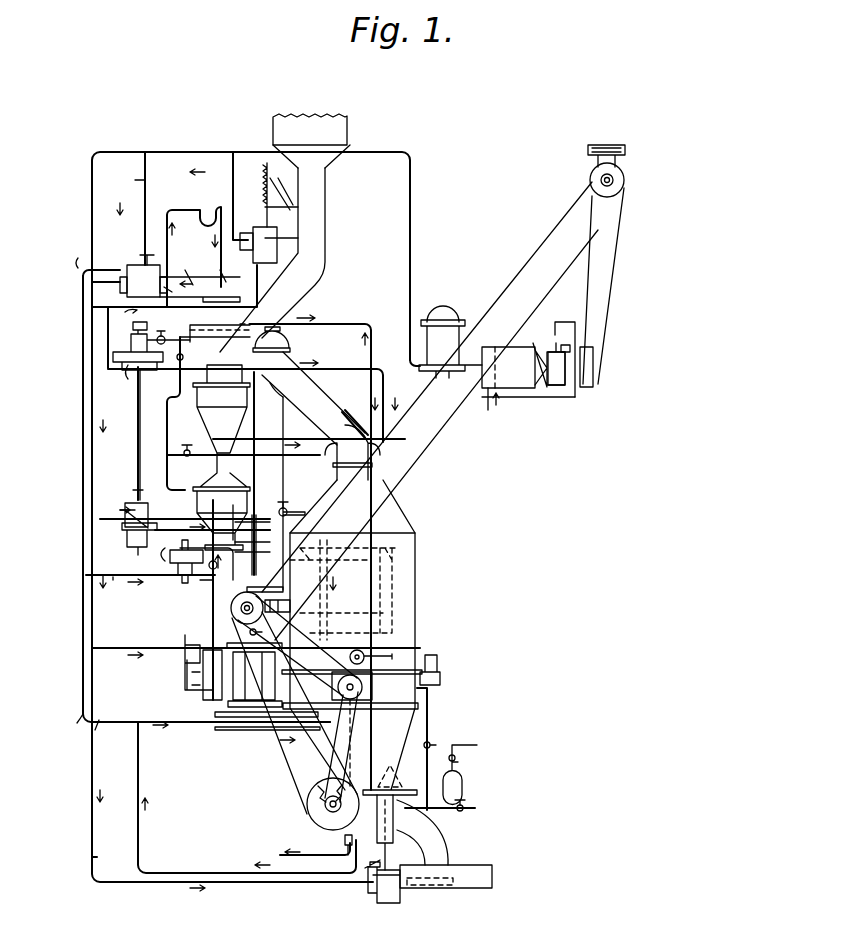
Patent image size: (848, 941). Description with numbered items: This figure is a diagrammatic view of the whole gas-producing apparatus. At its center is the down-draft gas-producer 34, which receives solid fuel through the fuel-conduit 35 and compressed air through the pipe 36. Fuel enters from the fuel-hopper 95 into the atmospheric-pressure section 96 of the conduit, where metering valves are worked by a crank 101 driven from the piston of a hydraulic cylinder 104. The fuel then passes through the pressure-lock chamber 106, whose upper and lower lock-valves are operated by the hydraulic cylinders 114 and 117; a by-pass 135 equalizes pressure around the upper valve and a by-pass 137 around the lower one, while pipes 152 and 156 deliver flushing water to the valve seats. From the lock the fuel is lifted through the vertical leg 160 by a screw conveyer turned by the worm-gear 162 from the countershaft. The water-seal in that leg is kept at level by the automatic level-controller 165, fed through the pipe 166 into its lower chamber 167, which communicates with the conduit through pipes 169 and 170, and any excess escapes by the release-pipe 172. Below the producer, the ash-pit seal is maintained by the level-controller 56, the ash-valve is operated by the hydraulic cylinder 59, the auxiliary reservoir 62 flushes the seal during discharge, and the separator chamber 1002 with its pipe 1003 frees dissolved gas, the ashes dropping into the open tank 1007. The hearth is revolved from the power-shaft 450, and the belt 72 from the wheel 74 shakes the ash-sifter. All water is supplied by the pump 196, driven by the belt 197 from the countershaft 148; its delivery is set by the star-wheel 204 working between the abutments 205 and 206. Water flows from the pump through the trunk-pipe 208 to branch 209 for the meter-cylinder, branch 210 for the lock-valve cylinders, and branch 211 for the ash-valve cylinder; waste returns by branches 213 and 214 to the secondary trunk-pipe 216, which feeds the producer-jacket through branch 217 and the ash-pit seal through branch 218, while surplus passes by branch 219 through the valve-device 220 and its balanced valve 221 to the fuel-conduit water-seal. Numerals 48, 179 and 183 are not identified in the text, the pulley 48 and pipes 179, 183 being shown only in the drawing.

The down-draft gas-producer 34 is at (353, 637).
The fuel-conduit 35 is at (316, 396).
The pipe 36 is at (287, 508).
The pulley 48 is at (625, 172).
The automatic level-controller 56 is at (210, 668).
The hydraulic cylinder 59 is at (392, 895).
The auxiliary reservoir 62 is at (250, 694).
The belt 72 is at (285, 650).
The wheel 74 is at (358, 698).
The fuel-hopper 95 is at (350, 130).
The atmospheric-pressure section 96 is at (318, 217).
The crank 101 is at (193, 583).
The hydraulic cylinder 104 is at (277, 248).
The lock-chamber 106 is at (225, 425).
The hydraulic cylinder 114 is at (100, 284).
The hydraulic cylinder 117 is at (336, 367).
The by-pass 135 is at (200, 340).
The by-pass 137 is at (166, 468).
The countershaft 148 is at (600, 179).
The pipe 152 is at (108, 340).
The pipe 156 is at (167, 223).
The vertical leg 160 is at (273, 458).
The worm-gear 162 is at (290, 607).
The automatic level-controller 165 is at (137, 440).
The pipe 166 is at (122, 509).
The lower chamber 167 is at (138, 534).
The pipe 169 is at (173, 530).
The pipe 170 is at (185, 508).
The level-controller release-pipe 172 is at (172, 548).
The pipe 179 is at (190, 338).
The pipe 183 is at (305, 336).
The pump 196 is at (528, 376).
The belt 197 is at (616, 240).
The star-wheel 204 is at (570, 342).
The abutment 205 is at (568, 348).
The abutment 206 is at (555, 322).
The trunk-pipe 208 is at (410, 243).
The branch 209 is at (233, 173).
The branch 210 is at (121, 181).
The branch 211 is at (93, 857).
The branch 213 is at (240, 282).
The branch 214 is at (120, 273).
The secondary trunk-pipe 216 is at (91, 468).
The branch 217 is at (132, 648).
The branch 218 is at (125, 722).
The branch 219 is at (113, 577).
The valve-device 220 is at (150, 575).
The balanced valve 221 is at (264, 520).
The power-shaft 450 is at (335, 814).
The separator chamber 1002 is at (455, 783).
The pipe 1003 is at (445, 812).
The tank 1007 is at (480, 875).